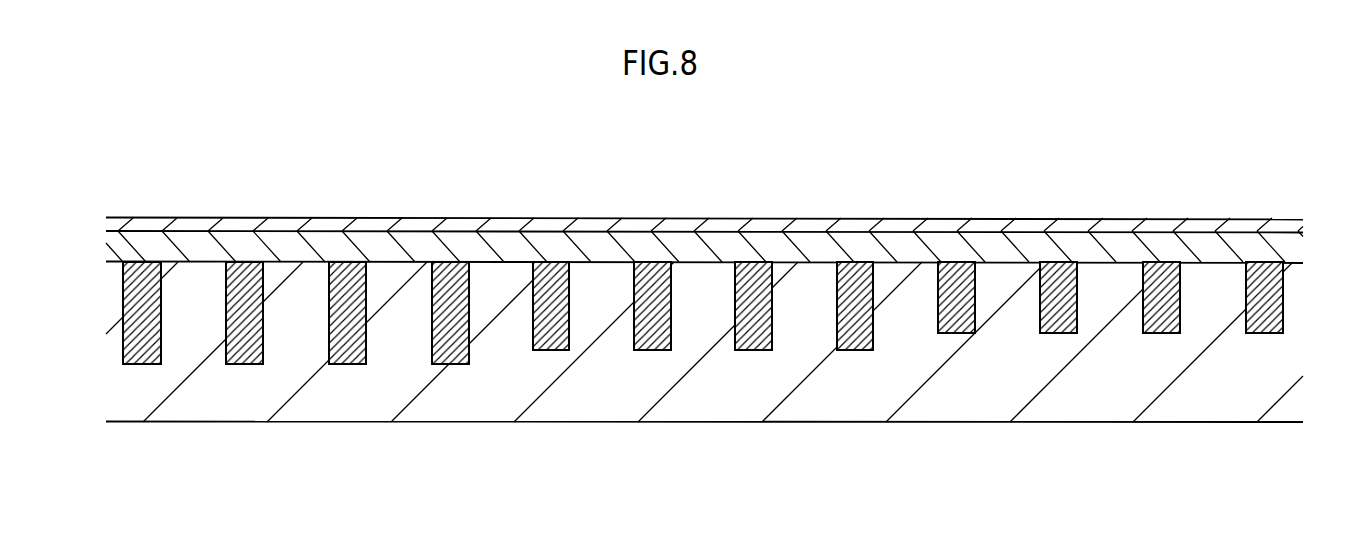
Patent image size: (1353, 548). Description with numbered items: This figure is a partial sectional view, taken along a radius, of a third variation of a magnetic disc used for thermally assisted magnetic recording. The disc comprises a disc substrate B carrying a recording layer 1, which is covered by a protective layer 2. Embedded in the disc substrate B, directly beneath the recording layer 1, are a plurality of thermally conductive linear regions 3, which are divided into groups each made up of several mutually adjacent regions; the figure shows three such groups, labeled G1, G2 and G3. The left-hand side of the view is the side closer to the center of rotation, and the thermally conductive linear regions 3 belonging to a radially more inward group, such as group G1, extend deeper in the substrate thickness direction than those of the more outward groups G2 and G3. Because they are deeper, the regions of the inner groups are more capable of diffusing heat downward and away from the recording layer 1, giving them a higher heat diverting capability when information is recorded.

The recording layer 1 is at (1025, 245).
The protective layer 2 is at (1150, 225).
The thermally conductive linear regions 3 is at (699, 336).
The disc substrate B is at (215, 403).
The group G1 is at (481, 353).
The group G2 is at (523, 342).
The group G3 is at (1108, 325).